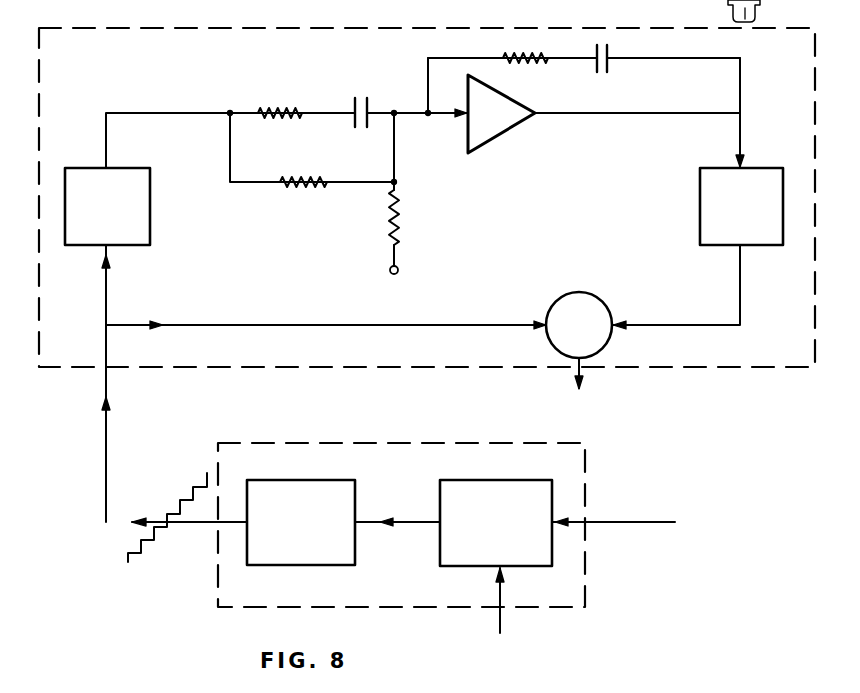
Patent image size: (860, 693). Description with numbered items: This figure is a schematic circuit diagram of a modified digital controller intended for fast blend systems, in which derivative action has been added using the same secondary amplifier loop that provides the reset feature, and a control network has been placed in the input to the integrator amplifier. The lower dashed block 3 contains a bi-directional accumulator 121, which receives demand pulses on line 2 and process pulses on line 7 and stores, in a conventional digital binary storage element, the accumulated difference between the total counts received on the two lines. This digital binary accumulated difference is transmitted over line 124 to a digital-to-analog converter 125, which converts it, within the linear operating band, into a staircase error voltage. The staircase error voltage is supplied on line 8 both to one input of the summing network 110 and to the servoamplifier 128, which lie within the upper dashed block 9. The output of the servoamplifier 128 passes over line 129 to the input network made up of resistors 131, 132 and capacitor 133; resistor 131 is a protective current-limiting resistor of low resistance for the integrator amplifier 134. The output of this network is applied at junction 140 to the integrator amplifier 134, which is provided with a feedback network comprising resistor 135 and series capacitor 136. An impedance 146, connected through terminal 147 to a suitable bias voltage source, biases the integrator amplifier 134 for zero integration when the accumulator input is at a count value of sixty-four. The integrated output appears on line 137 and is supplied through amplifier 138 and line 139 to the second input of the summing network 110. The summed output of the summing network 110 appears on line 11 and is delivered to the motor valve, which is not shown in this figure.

The control circuit 9 is at (420, 28).
The servoamplifier 128 is at (137, 209).
The line 129 is at (132, 113).
The resistor 131 is at (280, 112).
The resistor 132 is at (292, 187).
The capacitor 133 is at (362, 99).
The junction 140 is at (406, 116).
The integrator amplifier 134 is at (502, 117).
The resistor 135 is at (527, 63).
The series capacitor 136 is at (602, 73).
The line 137 is at (742, 112).
The amplifier 138 is at (705, 200).
The line 139 is at (740, 300).
The impedance 146 is at (397, 218).
The terminal 147 is at (399, 269).
The summing network 110 is at (571, 298).
The line 11 is at (581, 371).
The line 8 is at (107, 455).
The signal generating unit 3 is at (385, 444).
The digital-to-analog converter 125 is at (312, 555).
The bi-directional accumulator 121 is at (460, 493).
The line 124 is at (370, 521).
The line 2 is at (632, 522).
The line 7 is at (502, 618).